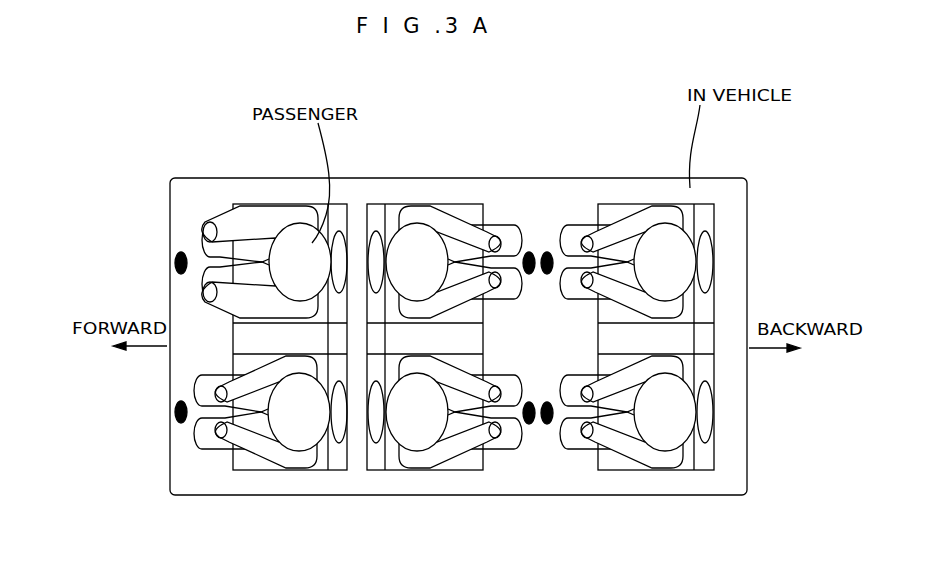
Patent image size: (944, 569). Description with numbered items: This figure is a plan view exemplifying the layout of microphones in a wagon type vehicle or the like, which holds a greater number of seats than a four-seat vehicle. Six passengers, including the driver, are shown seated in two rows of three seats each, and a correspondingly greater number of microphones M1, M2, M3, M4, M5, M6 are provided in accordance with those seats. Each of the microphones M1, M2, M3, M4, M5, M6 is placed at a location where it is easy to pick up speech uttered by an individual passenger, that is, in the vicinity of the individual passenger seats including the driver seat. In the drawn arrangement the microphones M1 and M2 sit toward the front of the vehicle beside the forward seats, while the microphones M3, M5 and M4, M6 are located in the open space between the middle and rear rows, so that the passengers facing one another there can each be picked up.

The microphone M1 is at (175, 263).
The microphone M2 is at (175, 410).
The microphone M3 is at (530, 250).
The microphone M4 is at (529, 425).
The microphone M5 is at (549, 250).
The microphone M6 is at (548, 425).